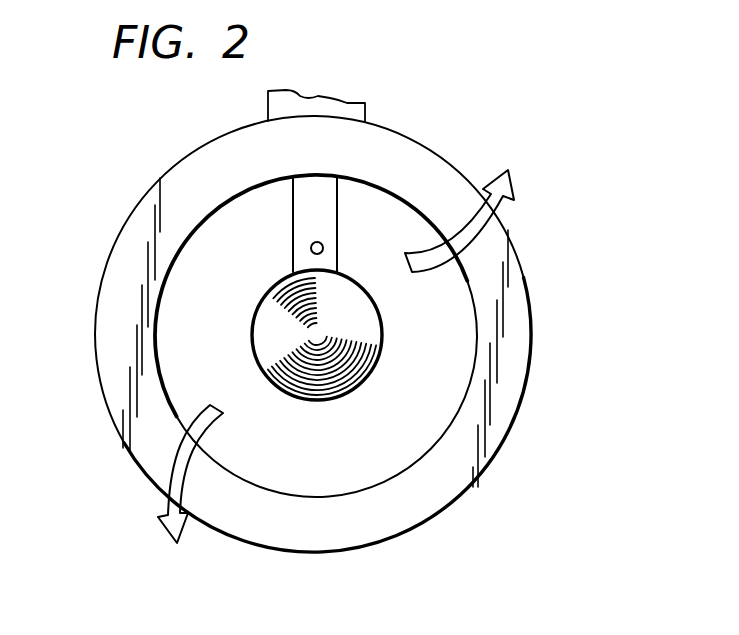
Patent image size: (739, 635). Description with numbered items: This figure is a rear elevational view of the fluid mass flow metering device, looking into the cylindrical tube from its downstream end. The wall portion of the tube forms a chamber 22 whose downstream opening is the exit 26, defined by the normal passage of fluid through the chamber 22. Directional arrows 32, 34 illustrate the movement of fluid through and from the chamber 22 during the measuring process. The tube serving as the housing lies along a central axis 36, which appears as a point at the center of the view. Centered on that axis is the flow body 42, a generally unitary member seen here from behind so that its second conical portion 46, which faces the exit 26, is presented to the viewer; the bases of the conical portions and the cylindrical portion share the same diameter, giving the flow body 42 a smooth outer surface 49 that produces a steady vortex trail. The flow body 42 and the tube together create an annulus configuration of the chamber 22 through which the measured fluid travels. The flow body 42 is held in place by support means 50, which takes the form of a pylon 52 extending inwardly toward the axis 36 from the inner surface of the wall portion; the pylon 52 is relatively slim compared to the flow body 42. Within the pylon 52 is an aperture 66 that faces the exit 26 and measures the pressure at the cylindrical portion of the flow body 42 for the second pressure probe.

The chamber 22 is at (368, 455).
The exit 26 is at (176, 322).
The directional arrow 32 is at (173, 478).
The directional arrow 34 is at (513, 190).
The central axis 36 is at (333, 353).
The flow body 42 is at (393, 350).
The second conical portion 46 is at (358, 317).
The smooth outer surface 49 is at (370, 374).
The support means 50 is at (283, 203).
The pylon 52 is at (323, 203).
The aperture 66 is at (310, 248).